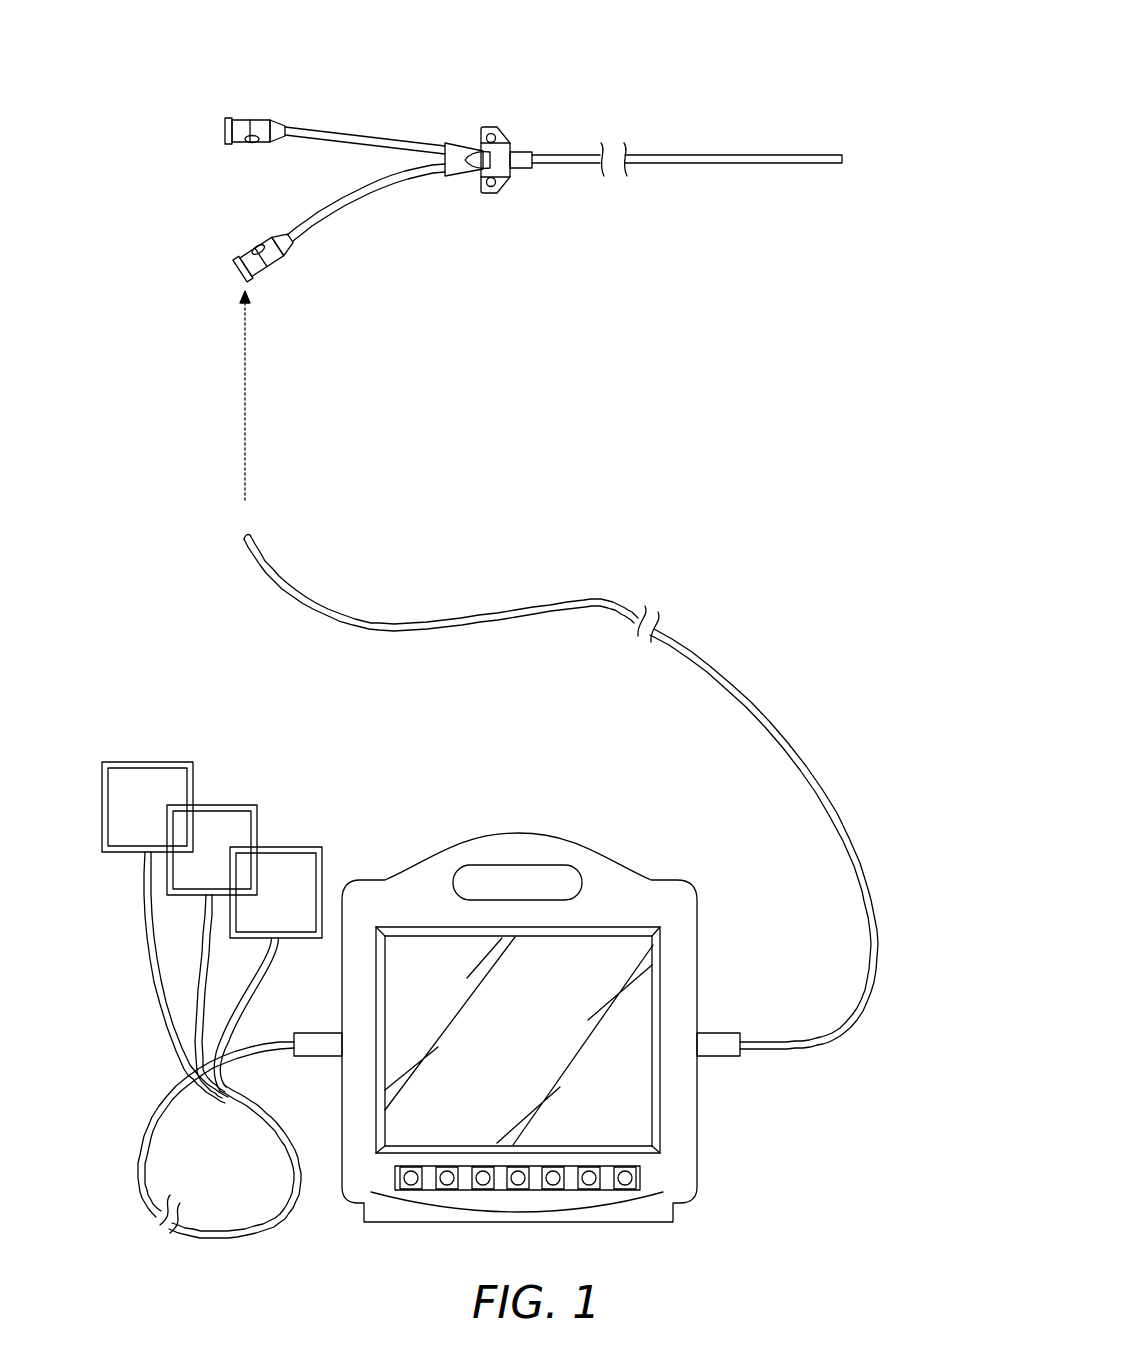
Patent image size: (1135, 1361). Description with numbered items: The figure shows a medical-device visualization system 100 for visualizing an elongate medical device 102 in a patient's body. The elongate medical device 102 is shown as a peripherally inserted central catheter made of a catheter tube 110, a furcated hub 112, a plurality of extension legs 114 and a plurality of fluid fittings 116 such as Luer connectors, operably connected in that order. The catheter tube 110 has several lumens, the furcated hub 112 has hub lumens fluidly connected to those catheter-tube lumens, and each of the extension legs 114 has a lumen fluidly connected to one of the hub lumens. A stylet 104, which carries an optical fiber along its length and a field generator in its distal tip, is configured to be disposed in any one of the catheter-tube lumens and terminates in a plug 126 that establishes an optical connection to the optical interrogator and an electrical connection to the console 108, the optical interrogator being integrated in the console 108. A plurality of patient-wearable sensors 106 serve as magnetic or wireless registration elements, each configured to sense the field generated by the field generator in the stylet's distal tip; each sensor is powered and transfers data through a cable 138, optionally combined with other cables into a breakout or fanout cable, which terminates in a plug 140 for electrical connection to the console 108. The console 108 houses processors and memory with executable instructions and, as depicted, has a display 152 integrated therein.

The medical-device visualization system 100 is at (717, 127).
The elongate medical device 102 is at (276, 190).
The stylet 104 is at (523, 600).
The patient-wearable sensors 106 is at (282, 835).
The console 108 is at (710, 973).
The catheter tube 110 is at (556, 155).
The furcated hub 112 is at (452, 165).
The extension legs 114 is at (337, 136).
The fluid fittings 116 is at (257, 128).
The plug 126 is at (722, 1058).
The cable 138 is at (222, 1238).
The plug 140 is at (317, 1057).
The display 152 is at (410, 955).